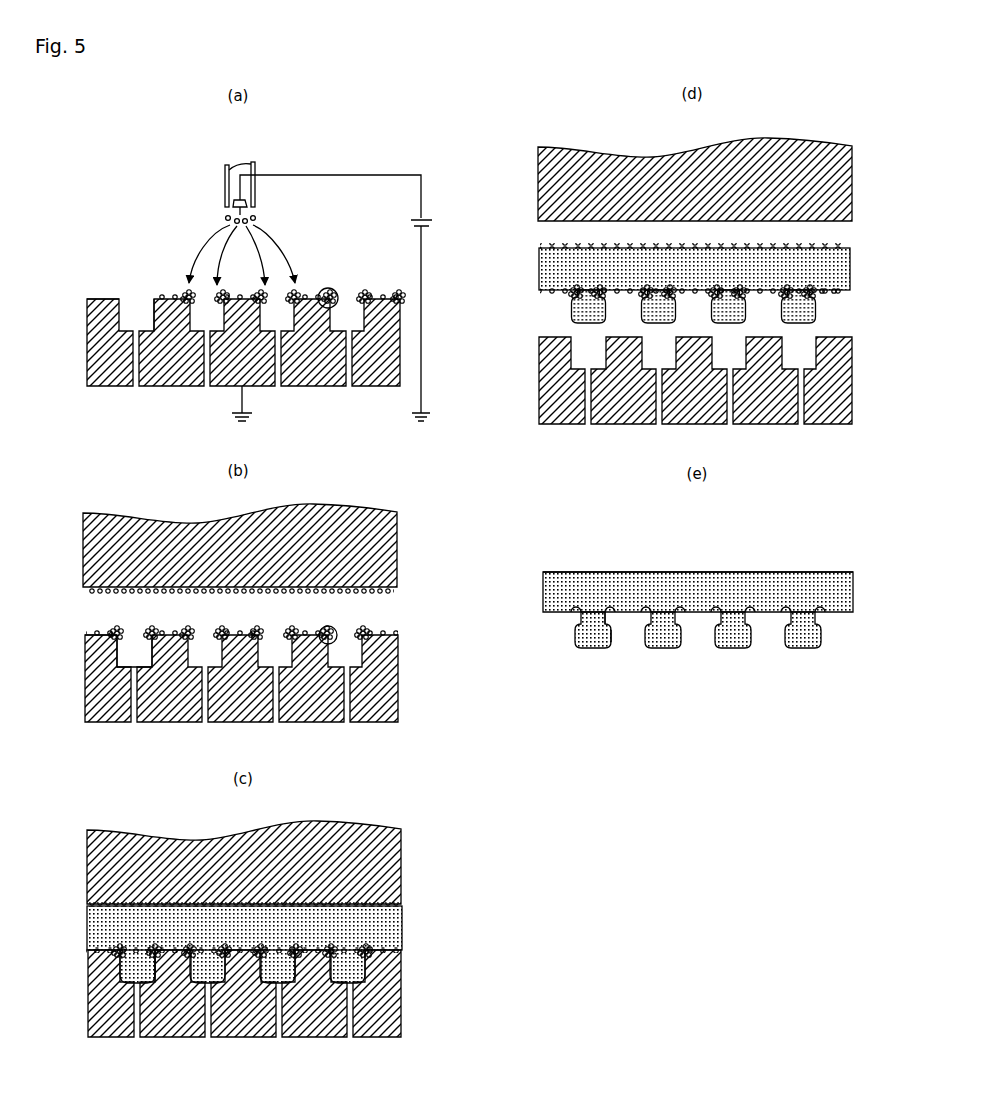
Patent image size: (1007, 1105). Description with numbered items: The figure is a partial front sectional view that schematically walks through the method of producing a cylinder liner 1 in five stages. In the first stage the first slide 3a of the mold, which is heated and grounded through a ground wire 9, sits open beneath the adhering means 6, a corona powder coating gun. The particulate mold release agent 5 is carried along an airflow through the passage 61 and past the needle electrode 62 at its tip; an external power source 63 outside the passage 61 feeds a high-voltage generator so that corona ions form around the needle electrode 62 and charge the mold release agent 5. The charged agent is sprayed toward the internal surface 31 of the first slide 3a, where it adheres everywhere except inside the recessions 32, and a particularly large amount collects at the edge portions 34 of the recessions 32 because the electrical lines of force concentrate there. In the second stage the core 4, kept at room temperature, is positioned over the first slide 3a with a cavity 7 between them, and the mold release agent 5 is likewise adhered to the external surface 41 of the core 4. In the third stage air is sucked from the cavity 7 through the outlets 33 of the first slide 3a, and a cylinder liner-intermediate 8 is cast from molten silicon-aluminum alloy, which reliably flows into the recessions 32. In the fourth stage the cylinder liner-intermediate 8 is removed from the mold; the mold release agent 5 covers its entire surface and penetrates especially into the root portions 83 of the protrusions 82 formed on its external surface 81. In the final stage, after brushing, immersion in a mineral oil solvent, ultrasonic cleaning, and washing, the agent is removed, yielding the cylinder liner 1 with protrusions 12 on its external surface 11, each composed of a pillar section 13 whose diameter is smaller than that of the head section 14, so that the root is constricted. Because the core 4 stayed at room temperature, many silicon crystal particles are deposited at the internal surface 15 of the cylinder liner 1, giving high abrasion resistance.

The cylinder liner 1 is at (703, 614).
The first slide 3a is at (80, 329).
The core 4 is at (401, 545).
The particulate mold release agent 5 is at (185, 292).
The adhering means 6 is at (296, 203).
The cavity 7 is at (356, 616).
The cylinder liner-intermediate 8 is at (406, 928).
The ground wire 9 is at (244, 400).
The external surface 11 is at (560, 615).
The protrusion 12 is at (593, 650).
The pillar section 13 is at (612, 613).
The head section 14 is at (612, 630).
The internal surface 15 is at (590, 572).
The internal surface 31 is at (103, 299).
The recession 32 is at (153, 313).
The outlet 33 is at (133, 662).
The edge portion 34 is at (336, 291).
The external surface 41 is at (105, 591).
The passage 61 is at (232, 190).
The needle electrode 62 is at (247, 211).
The external power source 63 is at (426, 213).
The external surface 81 is at (556, 291).
The protrusion 82 is at (571, 316).
The root portion 83 is at (827, 291).